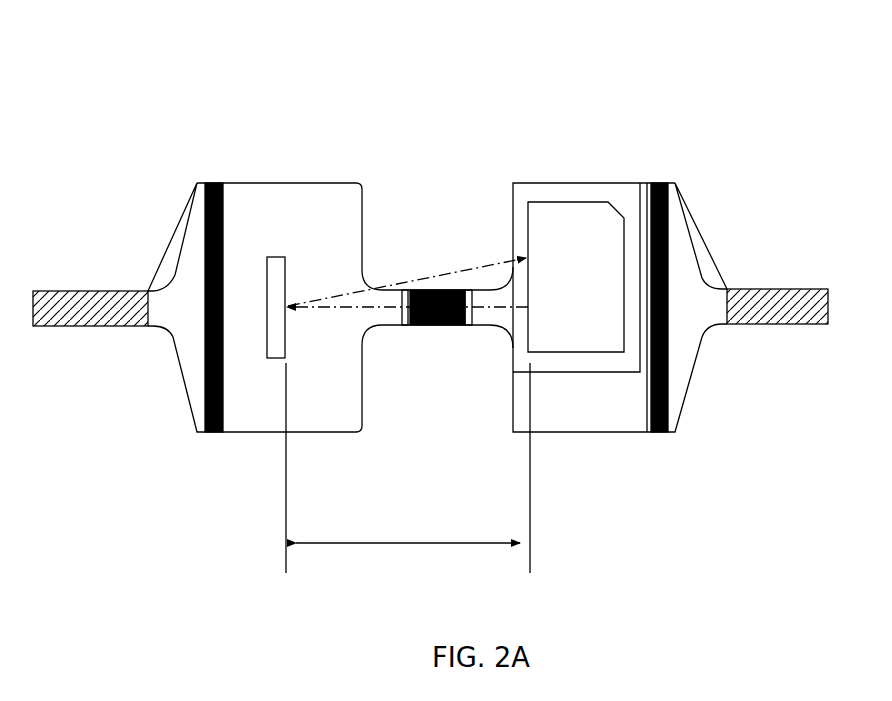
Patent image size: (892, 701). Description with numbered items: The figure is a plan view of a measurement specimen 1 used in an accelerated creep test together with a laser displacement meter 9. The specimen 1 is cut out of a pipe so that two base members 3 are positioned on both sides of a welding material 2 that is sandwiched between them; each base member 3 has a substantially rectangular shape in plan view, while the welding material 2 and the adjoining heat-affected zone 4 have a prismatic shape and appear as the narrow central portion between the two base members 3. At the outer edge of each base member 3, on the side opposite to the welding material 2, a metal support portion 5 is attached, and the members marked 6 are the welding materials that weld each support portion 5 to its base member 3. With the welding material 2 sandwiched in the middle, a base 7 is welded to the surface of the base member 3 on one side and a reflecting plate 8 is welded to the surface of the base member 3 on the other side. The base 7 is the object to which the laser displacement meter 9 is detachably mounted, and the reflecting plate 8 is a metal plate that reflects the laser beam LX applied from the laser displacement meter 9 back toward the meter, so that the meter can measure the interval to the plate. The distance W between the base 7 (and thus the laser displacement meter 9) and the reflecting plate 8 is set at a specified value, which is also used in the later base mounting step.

The specimen 1 is at (450, 136).
The welding material 2 is at (433, 326).
The base member 3 is at (313, 200).
The heat-affected zone 4 is at (403, 326).
The support portion 5 is at (167, 330).
The welding material 6 is at (213, 182).
The base 7 is at (603, 373).
The reflecting plate 8 is at (278, 257).
The laser displacement meter 9 is at (570, 202).
The laser beam LX is at (325, 303).
The distance W is at (408, 468).